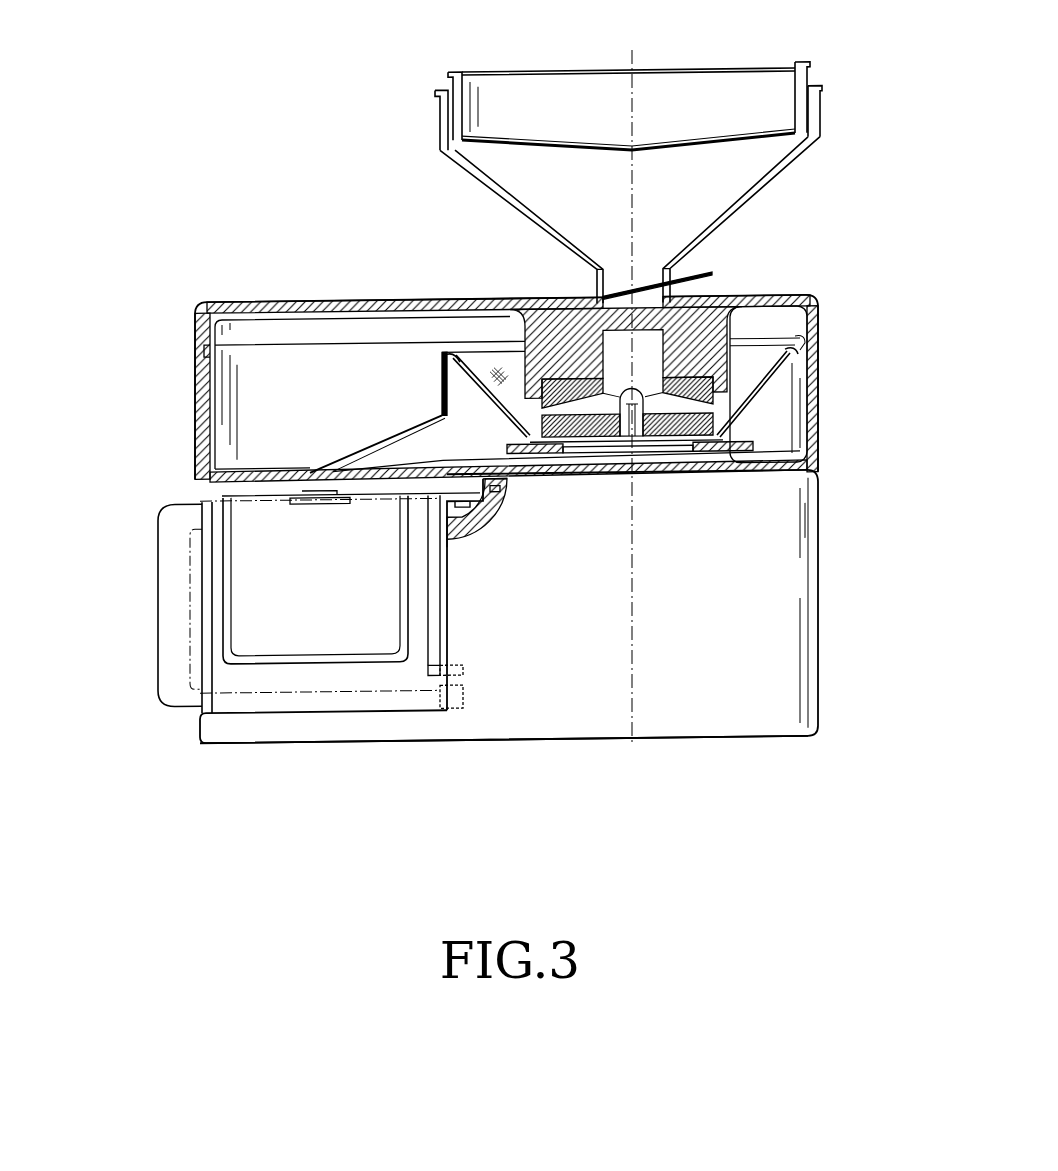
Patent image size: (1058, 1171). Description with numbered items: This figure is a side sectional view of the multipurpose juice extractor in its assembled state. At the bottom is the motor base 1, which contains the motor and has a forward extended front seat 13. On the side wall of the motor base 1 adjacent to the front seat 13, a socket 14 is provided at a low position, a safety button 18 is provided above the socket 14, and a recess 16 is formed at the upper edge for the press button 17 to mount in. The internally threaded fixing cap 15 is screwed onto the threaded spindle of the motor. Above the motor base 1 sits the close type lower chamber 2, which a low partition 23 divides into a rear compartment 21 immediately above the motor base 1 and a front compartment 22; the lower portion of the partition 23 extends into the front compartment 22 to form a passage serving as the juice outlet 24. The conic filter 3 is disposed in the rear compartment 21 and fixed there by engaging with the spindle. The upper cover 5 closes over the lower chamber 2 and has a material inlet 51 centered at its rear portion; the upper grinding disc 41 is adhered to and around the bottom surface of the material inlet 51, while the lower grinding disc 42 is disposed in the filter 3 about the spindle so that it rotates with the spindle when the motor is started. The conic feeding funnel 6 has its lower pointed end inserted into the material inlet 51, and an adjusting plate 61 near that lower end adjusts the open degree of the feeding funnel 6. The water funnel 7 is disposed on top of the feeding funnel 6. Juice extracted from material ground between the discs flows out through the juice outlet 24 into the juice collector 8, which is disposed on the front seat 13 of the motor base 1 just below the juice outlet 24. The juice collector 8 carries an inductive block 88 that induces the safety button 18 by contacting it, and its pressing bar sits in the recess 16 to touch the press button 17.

The motor base 1 is at (788, 712).
The close type lower chamber 2 is at (200, 442).
The filter 3 is at (778, 374).
The upper cover 5 is at (233, 297).
The feeding funnel 6 is at (777, 169).
The water funnel 7 is at (593, 87).
The juice collector 8 is at (120, 597).
The front seat 13 is at (270, 723).
The socket 14 is at (453, 710).
The fixing cap 15 is at (712, 388).
The recess 16 is at (497, 498).
The press button 17 is at (463, 538).
The safety button 18 is at (463, 541).
The rear compartment 21 is at (770, 442).
The front compartment 22 is at (265, 406).
The partition 23 is at (442, 385).
The juice outlet 24 is at (378, 449).
The upper grinding disc 41 is at (567, 379).
The lower grinding disc 42 is at (663, 437).
The material inlet 51 is at (655, 355).
The adjusting plate 61 is at (712, 274).
The inductive block 88 is at (428, 667).